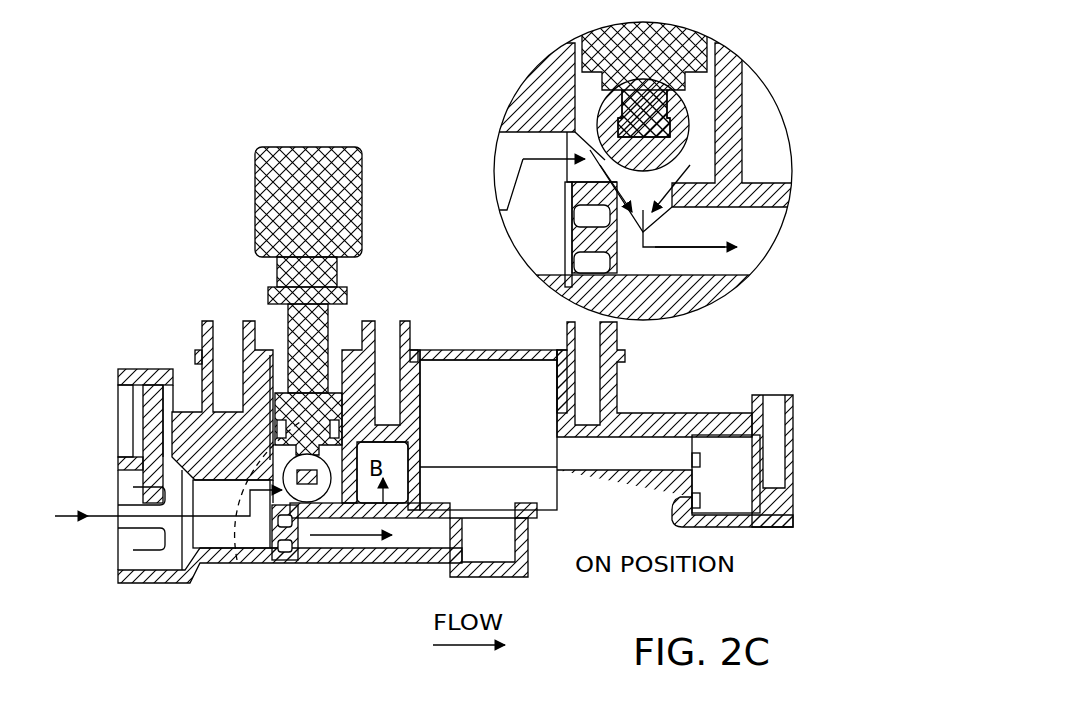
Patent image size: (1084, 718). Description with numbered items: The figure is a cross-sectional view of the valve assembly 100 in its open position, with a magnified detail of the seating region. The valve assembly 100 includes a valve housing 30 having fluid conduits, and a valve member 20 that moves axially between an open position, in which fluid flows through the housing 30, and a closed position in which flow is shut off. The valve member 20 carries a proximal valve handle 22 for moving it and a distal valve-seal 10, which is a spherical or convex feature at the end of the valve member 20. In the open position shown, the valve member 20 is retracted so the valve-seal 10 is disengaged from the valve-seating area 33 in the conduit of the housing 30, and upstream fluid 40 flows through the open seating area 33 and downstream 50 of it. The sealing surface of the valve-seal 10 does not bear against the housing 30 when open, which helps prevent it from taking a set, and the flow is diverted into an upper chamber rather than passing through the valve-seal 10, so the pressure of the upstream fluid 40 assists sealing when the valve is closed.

The valve assembly 100 is at (163, 162).
The valve handle 22 is at (362, 197).
The valve member 20 is at (332, 315).
The valve-seal 10 is at (690, 118).
The valve housing 30 is at (180, 583).
The valve-seating area 33 is at (295, 563).
The upstream fluid 40 is at (70, 520).
The downstream 50 is at (348, 563).